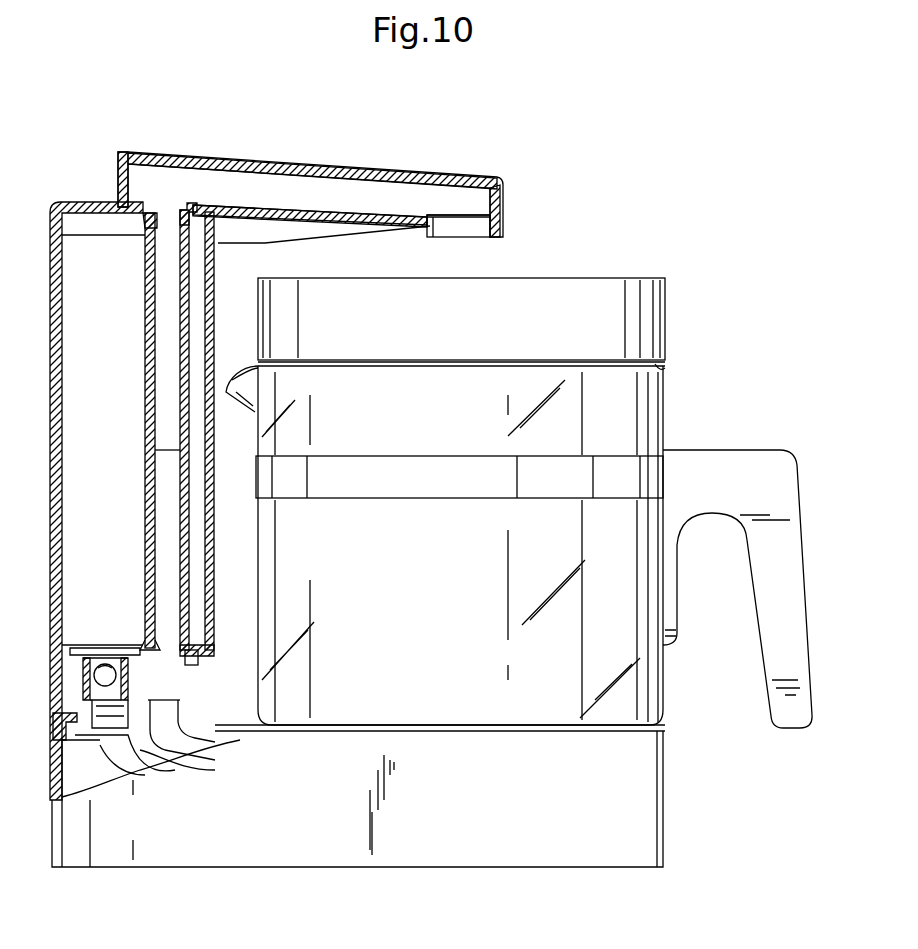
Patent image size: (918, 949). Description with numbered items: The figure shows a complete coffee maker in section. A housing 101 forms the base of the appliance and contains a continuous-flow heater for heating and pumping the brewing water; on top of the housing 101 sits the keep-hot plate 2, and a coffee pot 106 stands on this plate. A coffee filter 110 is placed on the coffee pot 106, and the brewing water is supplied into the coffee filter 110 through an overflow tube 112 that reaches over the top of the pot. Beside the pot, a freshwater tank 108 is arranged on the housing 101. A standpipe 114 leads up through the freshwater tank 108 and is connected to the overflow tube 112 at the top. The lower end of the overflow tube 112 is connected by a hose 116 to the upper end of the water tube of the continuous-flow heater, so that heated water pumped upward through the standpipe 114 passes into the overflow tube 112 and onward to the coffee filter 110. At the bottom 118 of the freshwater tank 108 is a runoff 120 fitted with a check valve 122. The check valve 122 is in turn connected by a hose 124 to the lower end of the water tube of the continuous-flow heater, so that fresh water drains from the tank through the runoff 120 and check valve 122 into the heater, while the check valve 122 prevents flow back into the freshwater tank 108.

The keep-hot plate 2 is at (437, 732).
The housing 101 is at (330, 848).
The coffee pot 106 is at (645, 400).
The freshwater tank 108 is at (216, 558).
The coffee filter 110 is at (553, 292).
The overflow tube 112 is at (350, 166).
The standpipe 114 is at (160, 345).
The hose 116 is at (172, 745).
The bottom 118 is at (128, 650).
The runoff 120 is at (105, 662).
The check valve 122 is at (130, 693).
The hose 124 is at (117, 752).